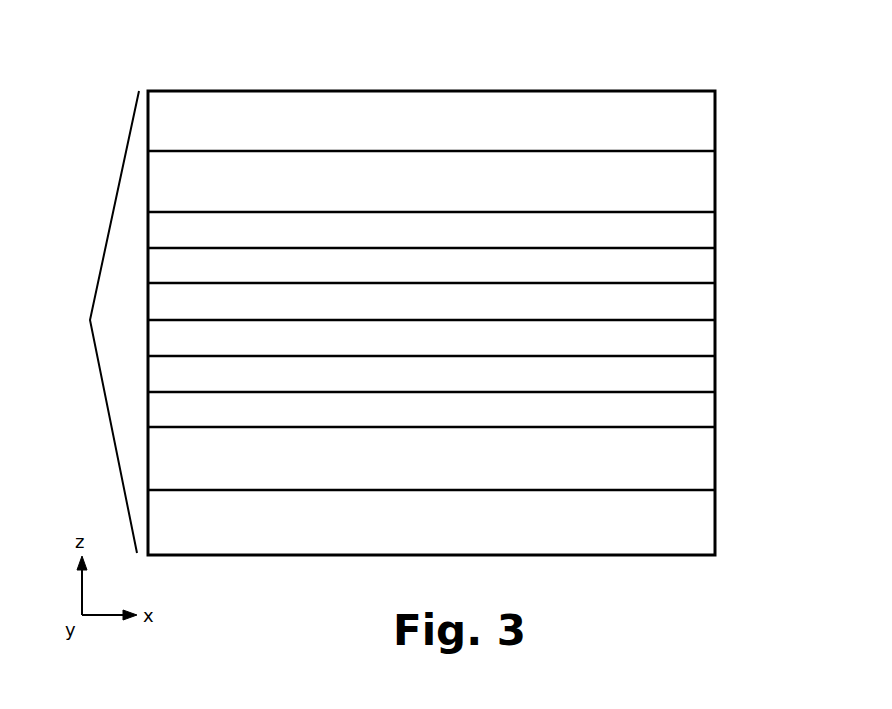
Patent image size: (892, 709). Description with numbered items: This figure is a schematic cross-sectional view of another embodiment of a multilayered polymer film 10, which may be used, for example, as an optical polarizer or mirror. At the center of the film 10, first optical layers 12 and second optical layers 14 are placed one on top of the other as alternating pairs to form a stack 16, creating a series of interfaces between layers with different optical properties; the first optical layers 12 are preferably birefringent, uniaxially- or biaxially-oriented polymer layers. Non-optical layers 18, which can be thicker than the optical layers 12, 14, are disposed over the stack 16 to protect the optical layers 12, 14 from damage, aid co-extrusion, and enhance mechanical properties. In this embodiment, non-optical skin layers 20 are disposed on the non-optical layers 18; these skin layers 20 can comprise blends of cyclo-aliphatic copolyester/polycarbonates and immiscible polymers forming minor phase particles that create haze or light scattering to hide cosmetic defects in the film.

The multilayered polymer film 10 is at (683, 71).
The first optical layers 12 is at (715, 229).
The second optical layers 14 is at (715, 265).
The stack 16 is at (99, 322).
The non-optical layers 18 is at (715, 182).
The non-optical skin layers 20 is at (715, 122).